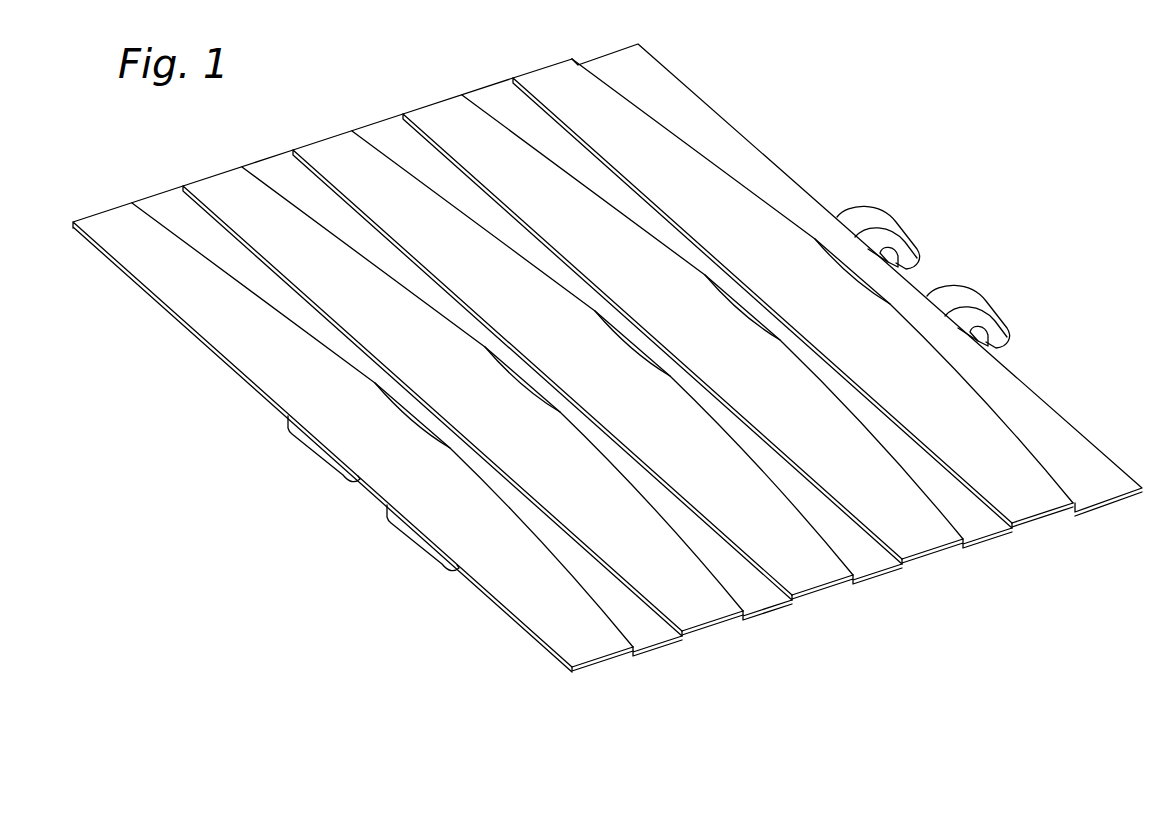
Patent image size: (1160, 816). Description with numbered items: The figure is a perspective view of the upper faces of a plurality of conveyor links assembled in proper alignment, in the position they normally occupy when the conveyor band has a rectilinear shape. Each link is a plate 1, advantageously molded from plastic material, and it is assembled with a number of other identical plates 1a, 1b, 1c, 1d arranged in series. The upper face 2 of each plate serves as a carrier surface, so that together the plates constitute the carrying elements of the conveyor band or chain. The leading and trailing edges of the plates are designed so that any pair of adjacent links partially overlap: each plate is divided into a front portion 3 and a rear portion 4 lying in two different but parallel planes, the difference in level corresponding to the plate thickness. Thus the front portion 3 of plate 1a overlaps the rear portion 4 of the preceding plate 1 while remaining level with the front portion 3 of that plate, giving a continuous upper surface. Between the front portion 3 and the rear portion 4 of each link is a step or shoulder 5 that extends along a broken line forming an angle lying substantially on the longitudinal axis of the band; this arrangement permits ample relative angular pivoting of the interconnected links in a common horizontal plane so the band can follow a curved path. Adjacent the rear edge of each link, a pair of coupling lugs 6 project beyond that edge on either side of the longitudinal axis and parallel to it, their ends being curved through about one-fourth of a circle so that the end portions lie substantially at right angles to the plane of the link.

The plate 1 is at (103, 208).
The identical plate 1a is at (207, 177).
The identical plate 1b is at (325, 136).
The identical plate 1c is at (430, 90).
The identical plate 1d is at (538, 68).
The upper face 2 is at (578, 629).
The front portion 3 is at (608, 661).
The rear portion 4 is at (654, 633).
The step or shoulder 5 is at (270, 306).
The coupling lugs 6 is at (876, 218).